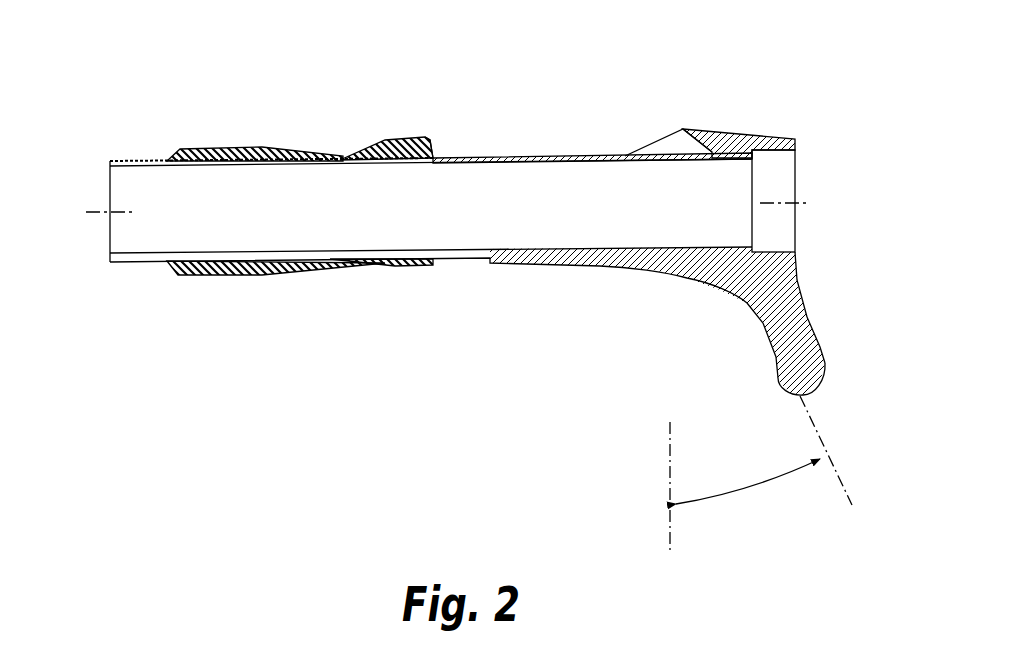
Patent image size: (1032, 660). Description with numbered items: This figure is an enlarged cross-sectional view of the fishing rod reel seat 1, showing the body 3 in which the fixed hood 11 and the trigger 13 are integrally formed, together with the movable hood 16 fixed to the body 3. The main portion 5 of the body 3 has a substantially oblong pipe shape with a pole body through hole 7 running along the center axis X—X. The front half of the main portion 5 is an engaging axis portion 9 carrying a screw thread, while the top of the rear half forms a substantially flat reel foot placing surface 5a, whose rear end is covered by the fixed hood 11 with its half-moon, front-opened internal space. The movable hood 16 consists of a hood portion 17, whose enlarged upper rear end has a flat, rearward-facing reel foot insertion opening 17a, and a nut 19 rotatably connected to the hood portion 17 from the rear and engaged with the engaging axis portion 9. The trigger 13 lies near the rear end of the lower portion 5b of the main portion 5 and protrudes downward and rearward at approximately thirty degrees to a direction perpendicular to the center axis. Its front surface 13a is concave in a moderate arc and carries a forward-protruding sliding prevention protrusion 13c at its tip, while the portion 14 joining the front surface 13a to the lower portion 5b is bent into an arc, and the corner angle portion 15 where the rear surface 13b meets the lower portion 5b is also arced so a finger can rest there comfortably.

The reel seat 1 is at (301, 428).
The body 3 is at (796, 140).
The main portion 5 is at (518, 266).
The reel foot placing surface 5a is at (536, 155).
The lower portion 5b is at (588, 268).
The pole body through hole 7 is at (337, 219).
The engaging axis portion 9 is at (268, 280).
The fixed hood 11 is at (668, 137).
The trigger 13 is at (826, 373).
The front surface 13a is at (768, 335).
The rear surface 13b is at (810, 323).
The sliding prevention protrusion 13c is at (780, 386).
The connecting portion 14 is at (737, 287).
The corner angle portion 15 is at (800, 270).
The movable hood 16 is at (250, 50).
The hood portion 17 is at (397, 134).
The reel foot insertion opening 17a is at (441, 148).
The nut 19 is at (293, 150).